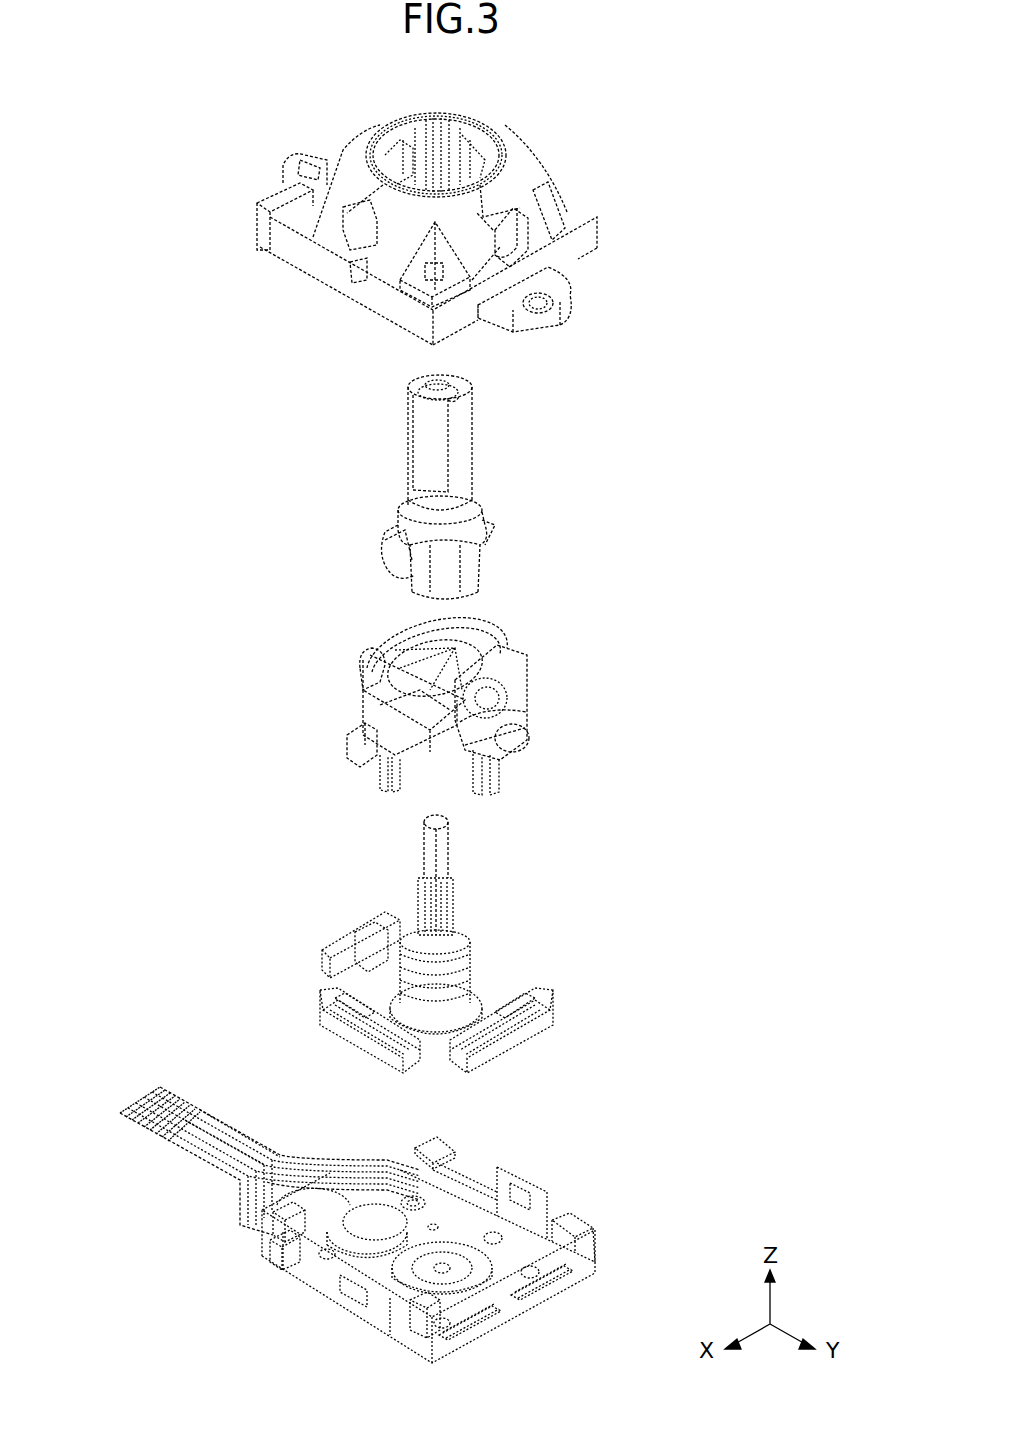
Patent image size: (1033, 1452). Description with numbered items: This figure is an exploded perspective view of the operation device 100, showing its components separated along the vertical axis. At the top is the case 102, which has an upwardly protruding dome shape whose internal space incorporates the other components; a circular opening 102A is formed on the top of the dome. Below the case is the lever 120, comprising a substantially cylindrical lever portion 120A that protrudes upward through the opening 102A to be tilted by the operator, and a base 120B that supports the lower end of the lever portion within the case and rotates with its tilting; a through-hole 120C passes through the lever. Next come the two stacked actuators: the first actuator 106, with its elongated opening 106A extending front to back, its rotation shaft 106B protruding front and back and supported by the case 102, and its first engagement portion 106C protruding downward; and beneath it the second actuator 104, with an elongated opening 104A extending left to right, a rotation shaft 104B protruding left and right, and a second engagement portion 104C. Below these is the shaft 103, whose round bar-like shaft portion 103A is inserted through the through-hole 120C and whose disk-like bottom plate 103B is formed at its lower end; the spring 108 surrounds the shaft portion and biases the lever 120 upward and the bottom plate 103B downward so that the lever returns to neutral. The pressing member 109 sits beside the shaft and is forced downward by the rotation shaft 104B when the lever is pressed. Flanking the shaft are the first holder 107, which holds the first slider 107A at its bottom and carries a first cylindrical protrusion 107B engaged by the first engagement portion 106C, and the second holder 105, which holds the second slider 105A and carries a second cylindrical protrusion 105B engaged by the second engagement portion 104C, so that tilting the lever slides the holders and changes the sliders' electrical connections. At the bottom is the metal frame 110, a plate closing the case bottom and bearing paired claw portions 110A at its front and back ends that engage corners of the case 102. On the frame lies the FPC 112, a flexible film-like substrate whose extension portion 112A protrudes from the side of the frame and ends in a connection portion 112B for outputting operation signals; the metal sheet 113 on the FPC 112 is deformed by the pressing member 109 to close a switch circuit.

The operation device 100 is at (765, 108).
The case 102 is at (577, 208).
The opening 102A is at (452, 140).
The shaft 103 is at (455, 840).
The shaft portion 103A is at (447, 858).
The bottom plate 103B is at (480, 1003).
The second actuator 104 is at (510, 708).
The elongated opening 104A is at (490, 690).
The rotation shaft 104B is at (370, 662).
The second engagement portion 104C is at (503, 773).
The second holder 105 is at (548, 1015).
The second slider 105A is at (500, 1045).
The second cylindrical protrusion 105B is at (478, 1010).
The first actuator 106 is at (380, 690).
The elongated opening 106A is at (470, 632).
The rotation shaft 106B is at (357, 738).
The first engagement portion 106C is at (372, 774).
The first holder 107 is at (318, 1020).
The first slider 107A is at (368, 1045).
The first cylindrical protrusion 107B is at (385, 1020).
The spring 108 is at (465, 958).
The pressing member 109 is at (360, 927).
The frame 110 is at (596, 1245).
The claw portion 110A is at (445, 1143).
The FPC 112 is at (353, 1152).
The extension portion 112A is at (212, 1165).
The connection portion 112B is at (140, 1128).
The metal sheet 113 is at (293, 1223).
The lever 120 is at (500, 466).
The lever portion 120A is at (465, 421).
The base 120B is at (470, 568).
The through-hole 120C is at (433, 380).